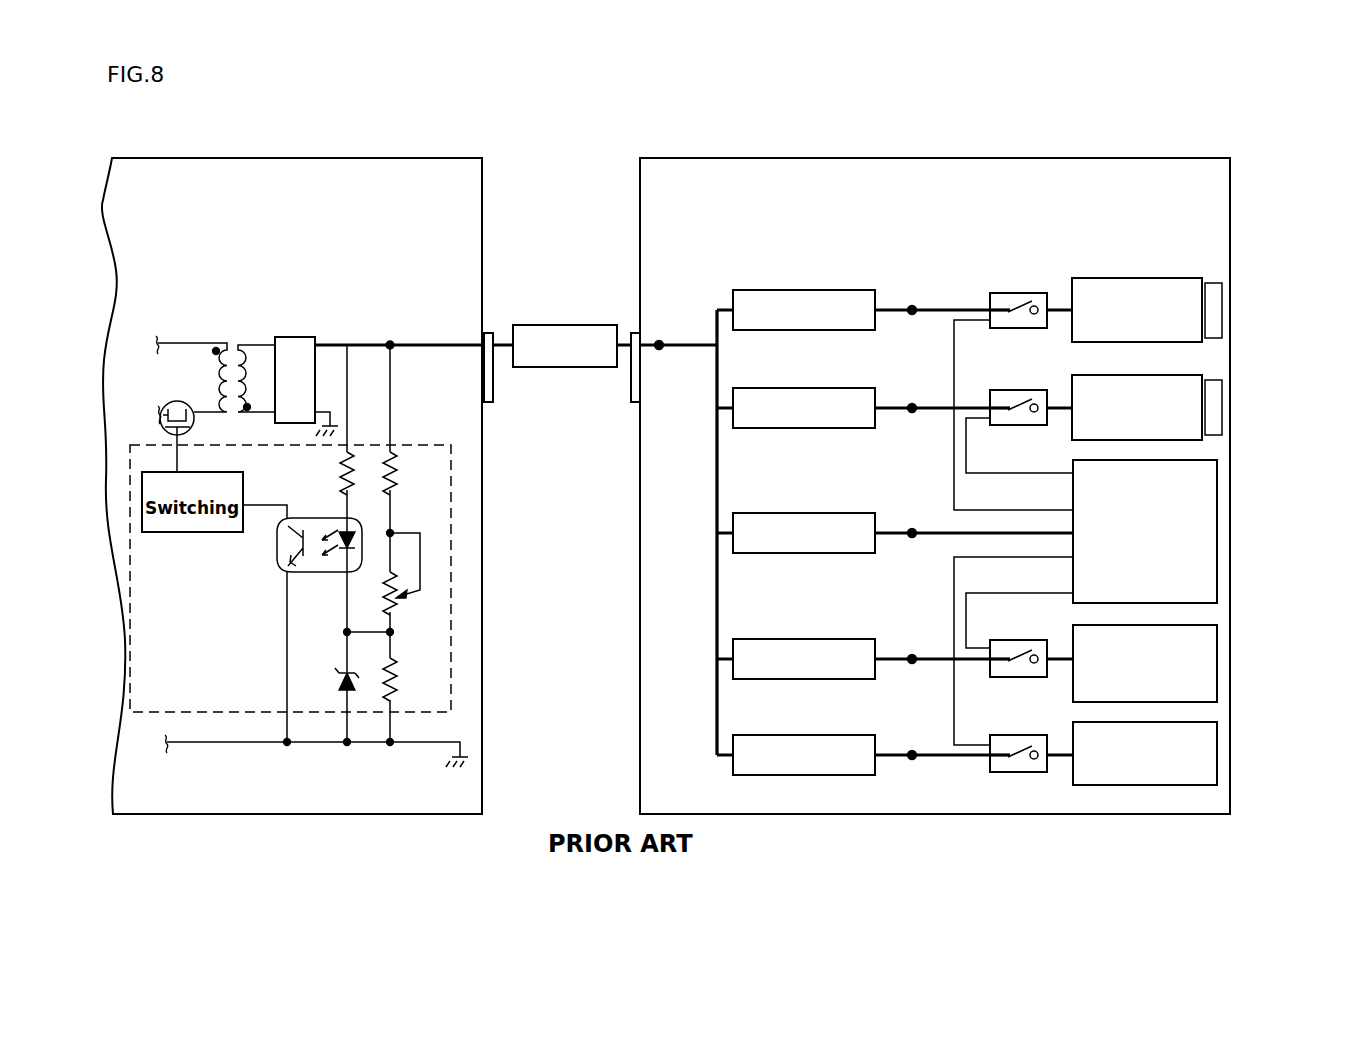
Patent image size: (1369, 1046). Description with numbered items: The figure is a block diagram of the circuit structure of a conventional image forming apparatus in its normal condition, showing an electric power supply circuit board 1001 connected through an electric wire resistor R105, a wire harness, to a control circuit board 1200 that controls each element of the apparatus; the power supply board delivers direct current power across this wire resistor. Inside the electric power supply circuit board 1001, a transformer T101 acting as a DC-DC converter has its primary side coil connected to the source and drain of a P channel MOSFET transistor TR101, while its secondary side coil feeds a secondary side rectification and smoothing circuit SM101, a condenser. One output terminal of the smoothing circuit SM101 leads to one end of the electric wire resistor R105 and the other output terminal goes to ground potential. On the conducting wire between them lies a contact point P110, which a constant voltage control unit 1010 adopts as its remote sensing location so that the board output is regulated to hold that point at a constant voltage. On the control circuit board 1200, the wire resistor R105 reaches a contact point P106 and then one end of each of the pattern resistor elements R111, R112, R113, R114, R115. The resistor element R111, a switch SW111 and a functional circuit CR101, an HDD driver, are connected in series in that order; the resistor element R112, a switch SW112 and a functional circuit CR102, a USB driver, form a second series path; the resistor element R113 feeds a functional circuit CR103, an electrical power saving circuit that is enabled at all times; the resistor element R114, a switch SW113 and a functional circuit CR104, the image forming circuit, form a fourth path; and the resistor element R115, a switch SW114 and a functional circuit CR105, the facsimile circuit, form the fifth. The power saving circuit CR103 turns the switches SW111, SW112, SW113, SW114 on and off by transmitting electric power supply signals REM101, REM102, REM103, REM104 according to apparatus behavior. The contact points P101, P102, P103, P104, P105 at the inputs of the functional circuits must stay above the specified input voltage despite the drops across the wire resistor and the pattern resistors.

The electric power supply circuit board 1001 is at (448, 144).
The control circuit board 1200 is at (1192, 144).
The constant voltage control unit 1010 is at (452, 539).
The transformer T101 is at (222, 346).
The transistor TR101 is at (162, 408).
The secondary side rectification and smoothing circuit SM101 is at (296, 337).
The contact point P110 is at (388, 343).
The electric wire resistor R105 is at (586, 325).
The contact point P106 is at (659, 343).
The resistor element R111 is at (834, 290).
The resistor element R112 is at (834, 388).
The resistor element R113 is at (834, 513).
The resistor element R114 is at (834, 639).
The resistor element R115 is at (834, 735).
The contact point P101 is at (912, 316).
The contact point P102 is at (912, 414).
The contact point P103 is at (912, 539).
The contact point P104 is at (912, 665).
The contact point P105 is at (912, 761).
The switch SW111 is at (1012, 293).
The switch SW112 is at (1012, 390).
The switch SW113 is at (1012, 677).
The switch SW114 is at (1012, 772).
The functional circuit CR101 is at (1186, 278).
The functional circuit CR102 is at (1186, 375).
The functional circuit CR103 is at (1217, 533).
The functional circuit CR104 is at (1217, 655).
The functional circuit CR105 is at (1217, 752).
The electric power supply signal REM101 is at (1013, 415).
The electric power supply signal REM102 is at (1019, 445).
The electric power supply signal REM103 is at (1019, 620).
The electric power supply signal REM104 is at (1013, 651).